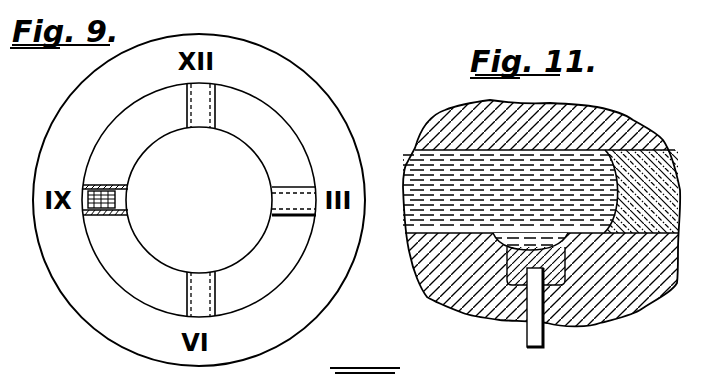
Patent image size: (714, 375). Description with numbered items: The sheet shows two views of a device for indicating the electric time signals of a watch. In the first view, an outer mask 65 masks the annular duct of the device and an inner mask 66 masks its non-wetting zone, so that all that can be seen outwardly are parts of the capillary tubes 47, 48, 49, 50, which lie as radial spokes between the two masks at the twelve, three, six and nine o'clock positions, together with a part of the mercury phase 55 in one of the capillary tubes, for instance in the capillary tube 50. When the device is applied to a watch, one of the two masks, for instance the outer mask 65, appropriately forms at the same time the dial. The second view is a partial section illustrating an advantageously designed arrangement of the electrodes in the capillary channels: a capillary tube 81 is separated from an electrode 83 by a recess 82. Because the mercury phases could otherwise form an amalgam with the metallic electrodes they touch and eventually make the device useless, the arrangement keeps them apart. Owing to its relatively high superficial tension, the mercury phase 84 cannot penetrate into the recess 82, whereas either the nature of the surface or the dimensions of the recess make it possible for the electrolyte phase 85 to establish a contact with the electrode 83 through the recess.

In FIG. 9, the outer mask 65 is at (293, 78).
In FIG. 9, the inner mask 66 is at (212, 229).
In FIG. 9, the capillary tube 47 is at (215, 112).
In FIG. 9, the capillary tube 48 is at (293, 193).
In FIG. 9, the capillary tube 49 is at (215, 290).
In FIG. 9, the mercury phase 55 is at (104, 185).
In FIG. 9, the capillary tube 50 is at (102, 217).
In FIG. 11, the capillary tube 81 is at (638, 152).
In FIG. 11, the electrolyte phase 85 is at (657, 170).
In FIG. 11, the mercury phase 84 is at (418, 213).
In FIG. 11, the recess 82 is at (562, 273).
In FIG. 11, the electrode 83 is at (540, 342).